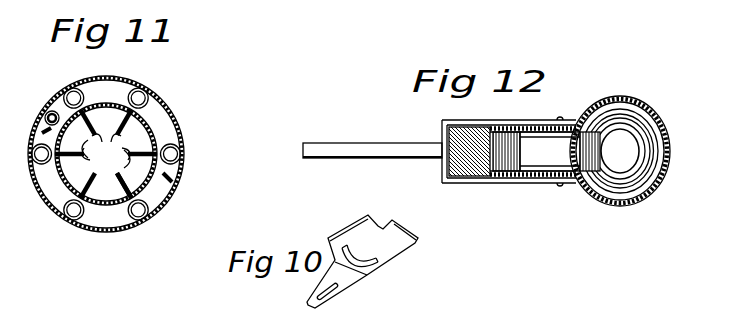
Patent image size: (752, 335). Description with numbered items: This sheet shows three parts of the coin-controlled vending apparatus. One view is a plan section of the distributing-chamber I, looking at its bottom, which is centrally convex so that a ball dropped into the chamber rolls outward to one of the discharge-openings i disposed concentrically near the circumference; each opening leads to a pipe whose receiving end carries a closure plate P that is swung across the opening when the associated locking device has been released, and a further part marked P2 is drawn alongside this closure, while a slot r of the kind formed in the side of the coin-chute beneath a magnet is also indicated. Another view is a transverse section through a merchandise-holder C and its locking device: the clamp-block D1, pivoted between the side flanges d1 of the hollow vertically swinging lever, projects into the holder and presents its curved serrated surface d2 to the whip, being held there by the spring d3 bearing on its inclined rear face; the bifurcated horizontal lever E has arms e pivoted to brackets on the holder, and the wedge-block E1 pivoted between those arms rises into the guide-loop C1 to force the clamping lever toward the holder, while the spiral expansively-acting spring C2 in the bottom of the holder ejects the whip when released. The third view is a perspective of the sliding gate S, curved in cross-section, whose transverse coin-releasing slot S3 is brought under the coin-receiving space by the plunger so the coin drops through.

In FIG. 11, the distributing-chamber I is at (152, 88).
In FIG. 11, the discharge-openings i is at (143, 104).
In FIG. 11, the slot r is at (176, 175).
In FIG. 11, the closure plate P is at (106, 154).
In FIG. 11, the lower pawl P2 is at (57, 216).
In FIG. 12, the horizontal lever E is at (368, 140).
In FIG. 12, the wedge-block E1 is at (474, 162).
In FIG. 12, the merchandise-holder C is at (628, 112).
In FIG. 12, the guide-loop C1 is at (497, 127).
In FIG. 12, the spiral expansively-acting spring C2 is at (648, 126).
In FIG. 12, the clamp-block D1 is at (550, 151).
In FIG. 12, the side flanges d1 is at (541, 184).
In FIG. 12, the curved serrated surface d2 is at (521, 128).
In FIG. 12, the spring d3 is at (500, 177).
In FIG. 12, the arms e is at (560, 120).
In FIG. 10, the sliding gate S is at (362, 219).
In FIG. 10, the coin-releasing slot S3 is at (366, 276).